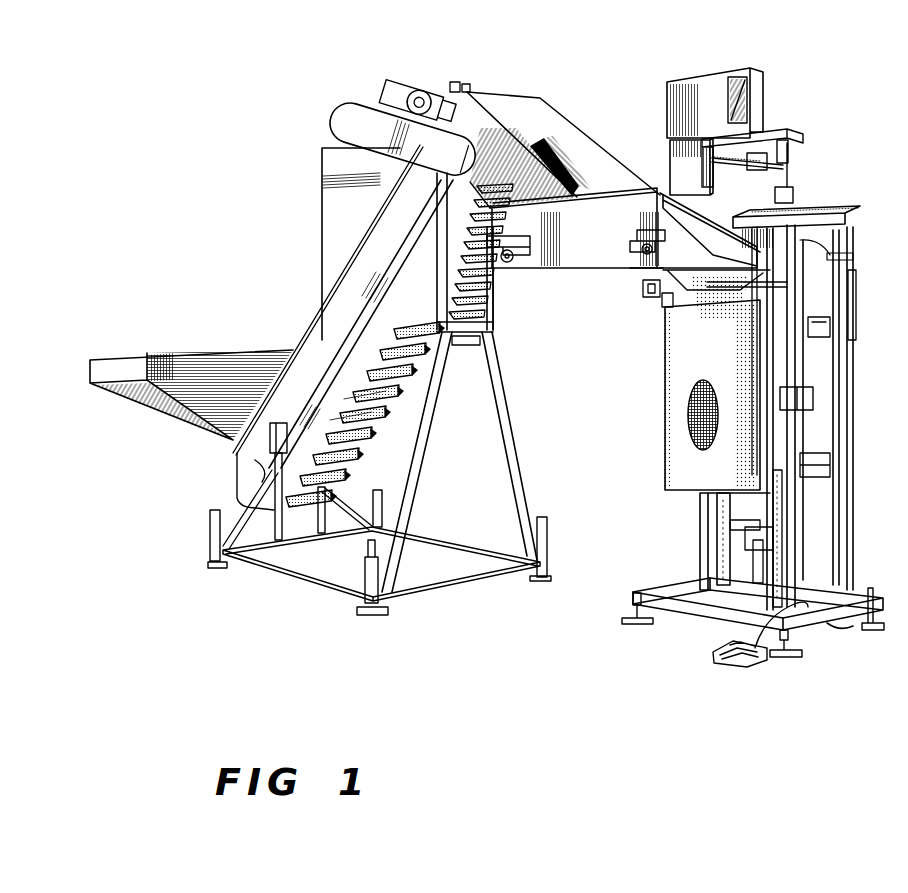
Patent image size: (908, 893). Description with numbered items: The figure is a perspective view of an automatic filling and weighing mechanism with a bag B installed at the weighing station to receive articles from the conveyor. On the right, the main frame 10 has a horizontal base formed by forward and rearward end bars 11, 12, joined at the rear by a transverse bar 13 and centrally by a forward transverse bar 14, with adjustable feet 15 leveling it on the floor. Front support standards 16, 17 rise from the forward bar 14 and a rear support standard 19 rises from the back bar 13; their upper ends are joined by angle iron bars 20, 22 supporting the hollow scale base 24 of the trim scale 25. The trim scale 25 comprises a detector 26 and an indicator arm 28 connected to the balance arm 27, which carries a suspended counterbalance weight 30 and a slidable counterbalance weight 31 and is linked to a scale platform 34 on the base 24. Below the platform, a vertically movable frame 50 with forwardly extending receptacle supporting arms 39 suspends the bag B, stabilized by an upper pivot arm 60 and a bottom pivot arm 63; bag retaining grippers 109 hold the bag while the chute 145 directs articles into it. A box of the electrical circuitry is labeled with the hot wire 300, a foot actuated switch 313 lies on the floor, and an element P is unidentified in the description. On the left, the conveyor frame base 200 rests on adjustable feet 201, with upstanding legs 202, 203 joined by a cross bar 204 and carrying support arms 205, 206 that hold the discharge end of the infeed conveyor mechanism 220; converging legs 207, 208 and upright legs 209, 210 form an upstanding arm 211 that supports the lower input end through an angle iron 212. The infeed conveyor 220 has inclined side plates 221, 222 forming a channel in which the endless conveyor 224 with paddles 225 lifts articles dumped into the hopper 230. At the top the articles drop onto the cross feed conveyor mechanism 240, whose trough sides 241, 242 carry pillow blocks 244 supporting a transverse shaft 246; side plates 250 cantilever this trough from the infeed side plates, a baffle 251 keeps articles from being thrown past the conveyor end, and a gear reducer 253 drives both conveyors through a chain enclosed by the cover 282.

The main frame 10 is at (845, 453).
The forward end bar 11 is at (683, 588).
The rearward end bar 12 is at (812, 622).
The transverse bar 13 is at (788, 585).
The forward transverse bar 14 is at (731, 603).
The adjustable feet 15 is at (630, 612).
The front support standard 16 is at (706, 517).
The front support standard 17 is at (796, 534).
The rear support standard 19 is at (850, 421).
The angle iron bar 20 is at (771, 238).
The angle iron bar 22 is at (848, 246).
The scale base 24 is at (827, 221).
The trim scale 25 is at (678, 170).
The detector 26 is at (690, 82).
The balance arm 27 is at (730, 168).
The indicator arm 28 is at (741, 76).
The counterbalance weight 30 is at (796, 190).
The slidable counterbalance weight 31 is at (763, 152).
The scale platform 34 is at (802, 218).
The receptacle supporting arms 39 is at (644, 290).
The vertically movable frame 50 is at (737, 433).
The upper pivot arm 60 is at (826, 328).
The bottom pivot arm 63 is at (833, 465).
The gripper 109 is at (663, 305).
The chute 145 is at (741, 317).
The frame base 200 is at (466, 583).
The adjustable feet 201 is at (386, 495).
The upstanding leg 202 is at (423, 433).
The upstanding leg 203 is at (512, 415).
The cross bar 204 is at (456, 340).
The support arm 205 is at (438, 212).
The support arm 206 is at (489, 309).
The converging support leg 207 is at (258, 497).
The converging support leg 208 is at (350, 508).
The upright support leg 209 is at (282, 521).
The upright support leg 210 is at (331, 484).
The upstanding arm 211 is at (263, 463).
The angle iron 212 is at (297, 410).
The infeed conveyor mechanism 220 is at (334, 366).
The side plate 221 is at (383, 219).
The side plate 222 is at (526, 108).
The endless conveyor 224 is at (396, 346).
The paddles 225 is at (414, 370).
The hopper 230 is at (166, 352).
The cross feed conveyor mechanism 240 is at (583, 207).
The trough side 241 is at (583, 262).
The trough side 242 is at (697, 213).
The pillow blocks 244 is at (516, 258).
The transverse shaft 246 is at (641, 252).
The side plates 250 is at (572, 190).
The baffle 251 is at (568, 138).
The gear reducer 253 is at (396, 88).
The cover 282 is at (347, 116).
The hot wire 300 is at (815, 398).
The foot actuated switch 313 is at (718, 666).
The bag B is at (663, 406).
The panel P is at (857, 287).